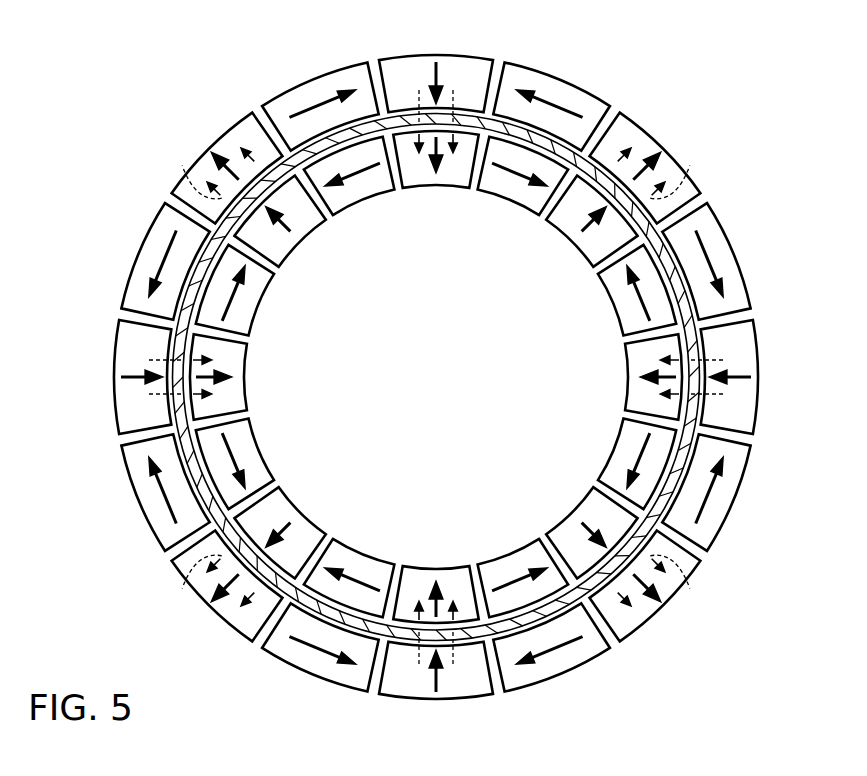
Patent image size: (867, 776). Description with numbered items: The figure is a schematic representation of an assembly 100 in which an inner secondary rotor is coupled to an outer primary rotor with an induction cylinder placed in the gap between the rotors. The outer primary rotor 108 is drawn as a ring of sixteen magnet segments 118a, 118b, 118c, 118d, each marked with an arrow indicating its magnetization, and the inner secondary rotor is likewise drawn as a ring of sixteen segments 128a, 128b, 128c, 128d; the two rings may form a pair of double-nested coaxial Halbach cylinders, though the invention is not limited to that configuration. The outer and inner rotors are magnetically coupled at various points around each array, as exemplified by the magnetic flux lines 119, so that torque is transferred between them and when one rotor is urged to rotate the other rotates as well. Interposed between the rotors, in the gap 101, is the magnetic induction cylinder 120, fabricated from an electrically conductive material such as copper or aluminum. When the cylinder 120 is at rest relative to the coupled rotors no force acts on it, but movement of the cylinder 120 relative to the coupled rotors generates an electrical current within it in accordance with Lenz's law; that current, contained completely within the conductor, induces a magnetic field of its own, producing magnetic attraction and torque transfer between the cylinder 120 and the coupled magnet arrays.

The electric machine magnet assembly 100 is at (134, 69).
The gap between magnet rings 101 is at (557, 612).
The outer magnet array 108 is at (570, 140).
The outer ring magnet segment, tangentially magnetized (first direction) 118a is at (546, 84).
The outer ring magnet segment, radially outward magnetized 118b is at (232, 133).
The outer ring magnet segment, tangentially magnetized (second direction) 118c is at (333, 78).
The outer ring magnet segment, radially inward magnetized 118d is at (422, 60).
The magnetic flux lines 119 is at (455, 92).
The magnetic induction cylinder 120 is at (307, 140).
The inner ring magnet segment, tangentially magnetized (first direction) 128a is at (508, 198).
The inner ring magnet segment, radially outward magnetized 128b is at (300, 238).
The inner ring magnet segment, tangentially magnetized (second direction) 128c is at (366, 200).
The inner ring magnet segment, radially inward magnetized 128d is at (441, 184).